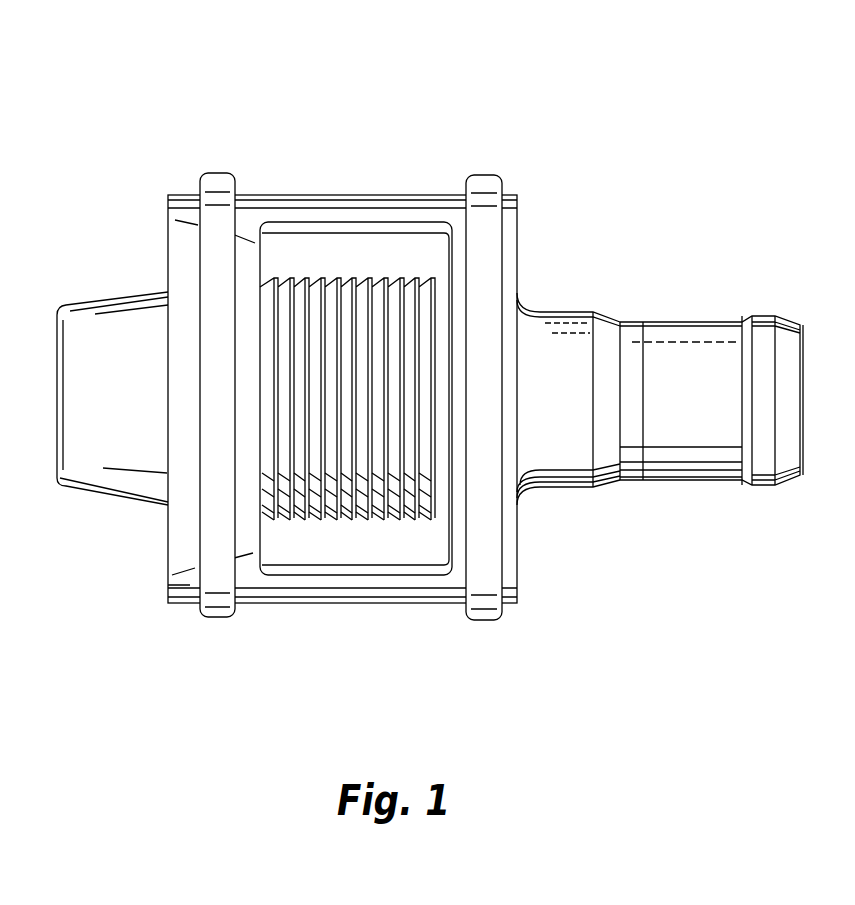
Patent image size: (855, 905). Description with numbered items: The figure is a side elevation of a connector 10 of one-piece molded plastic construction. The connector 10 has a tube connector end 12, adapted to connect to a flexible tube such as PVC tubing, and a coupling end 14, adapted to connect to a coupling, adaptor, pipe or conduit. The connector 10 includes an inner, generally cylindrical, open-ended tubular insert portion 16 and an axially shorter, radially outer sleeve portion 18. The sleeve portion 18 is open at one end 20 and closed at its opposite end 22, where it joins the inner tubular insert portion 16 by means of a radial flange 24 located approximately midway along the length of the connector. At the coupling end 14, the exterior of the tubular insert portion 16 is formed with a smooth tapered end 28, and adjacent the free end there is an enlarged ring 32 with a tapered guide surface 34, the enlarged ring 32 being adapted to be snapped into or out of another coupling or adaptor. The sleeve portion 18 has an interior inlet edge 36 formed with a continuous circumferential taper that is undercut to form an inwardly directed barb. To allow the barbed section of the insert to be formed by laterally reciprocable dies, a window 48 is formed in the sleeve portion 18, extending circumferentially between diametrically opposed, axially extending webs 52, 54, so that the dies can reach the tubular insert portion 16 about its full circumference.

The connector 10 is at (452, 384).
The tube connector end 12 is at (109, 413).
The coupling end 14 is at (686, 386).
The tubular insert portion 16 is at (137, 290).
The sleeve portion 18 is at (309, 376).
The open end 20 is at (168, 243).
The closed end 22 is at (448, 540).
The radial flange 24 is at (518, 247).
The tapered end 28 is at (108, 490).
The enlarged ring 32 is at (762, 488).
The tapered guide surface 34 is at (790, 487).
The inlet edge 36 is at (213, 563).
The window 48 is at (316, 247).
The web 52 is at (410, 200).
The web 54 is at (370, 597).